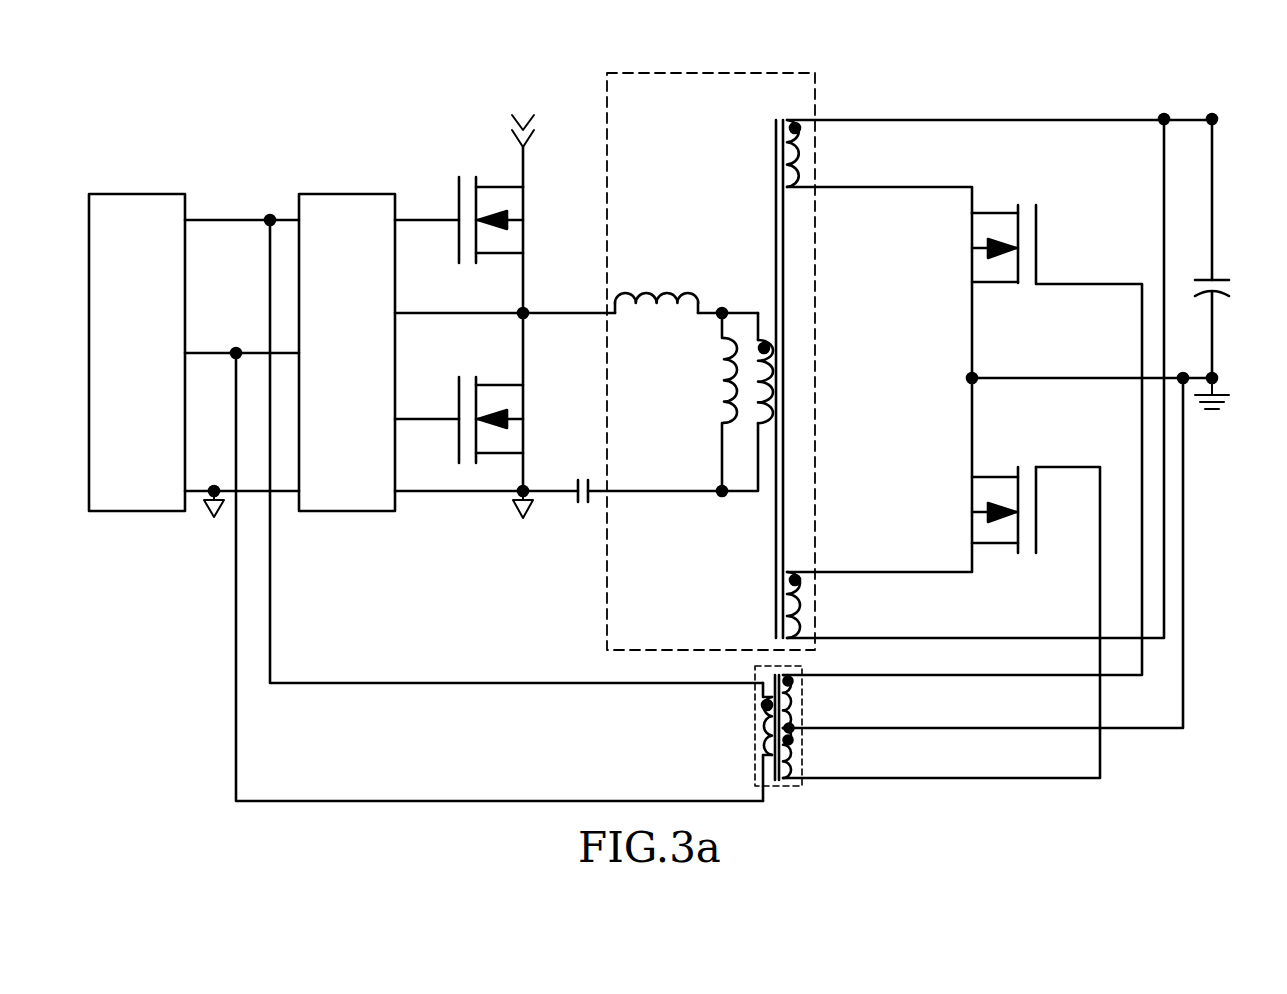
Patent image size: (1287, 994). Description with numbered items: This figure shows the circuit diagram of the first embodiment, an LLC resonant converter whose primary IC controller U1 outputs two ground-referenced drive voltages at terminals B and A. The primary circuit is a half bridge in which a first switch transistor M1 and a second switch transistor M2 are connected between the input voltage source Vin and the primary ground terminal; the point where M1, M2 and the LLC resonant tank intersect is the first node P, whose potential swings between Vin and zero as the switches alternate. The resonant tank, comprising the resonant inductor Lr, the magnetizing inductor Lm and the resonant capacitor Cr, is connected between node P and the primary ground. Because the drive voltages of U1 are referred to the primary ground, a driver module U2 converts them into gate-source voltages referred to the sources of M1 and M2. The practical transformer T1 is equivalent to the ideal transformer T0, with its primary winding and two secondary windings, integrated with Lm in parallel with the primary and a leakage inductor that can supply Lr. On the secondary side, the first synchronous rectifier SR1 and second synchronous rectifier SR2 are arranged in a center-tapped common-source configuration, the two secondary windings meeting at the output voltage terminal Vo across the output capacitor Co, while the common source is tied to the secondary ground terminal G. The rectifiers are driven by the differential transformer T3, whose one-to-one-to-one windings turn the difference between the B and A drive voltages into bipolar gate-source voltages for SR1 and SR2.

The primary IC controller U1 is at (137, 352).
The driver module U2 is at (347, 352).
The drive voltage output terminal A is at (474, 559).
The drive voltage output terminal B is at (474, 433).
The input voltage source Vin is at (520, 135).
The first switch transistor M1 is at (512, 220).
The second switch transistor M2 is at (512, 420).
The first node P is at (505, 328).
The resonant capacitor Cr is at (622, 477).
The resonant inductor Lr is at (686, 286).
The magnetizing inductor Lm is at (710, 402).
The practical transformer T1 is at (650, 73).
The ideal transformer T0 is at (761, 363).
The first synchronous rectifier SR1 is at (964, 440).
The second synchronous rectifier SR2 is at (943, 622).
The secondary ground terminal G is at (1008, 544).
The output voltage terminal Vo is at (1233, 192).
The output capacitor Co is at (1233, 325).
The differential transformer T3 is at (765, 729).